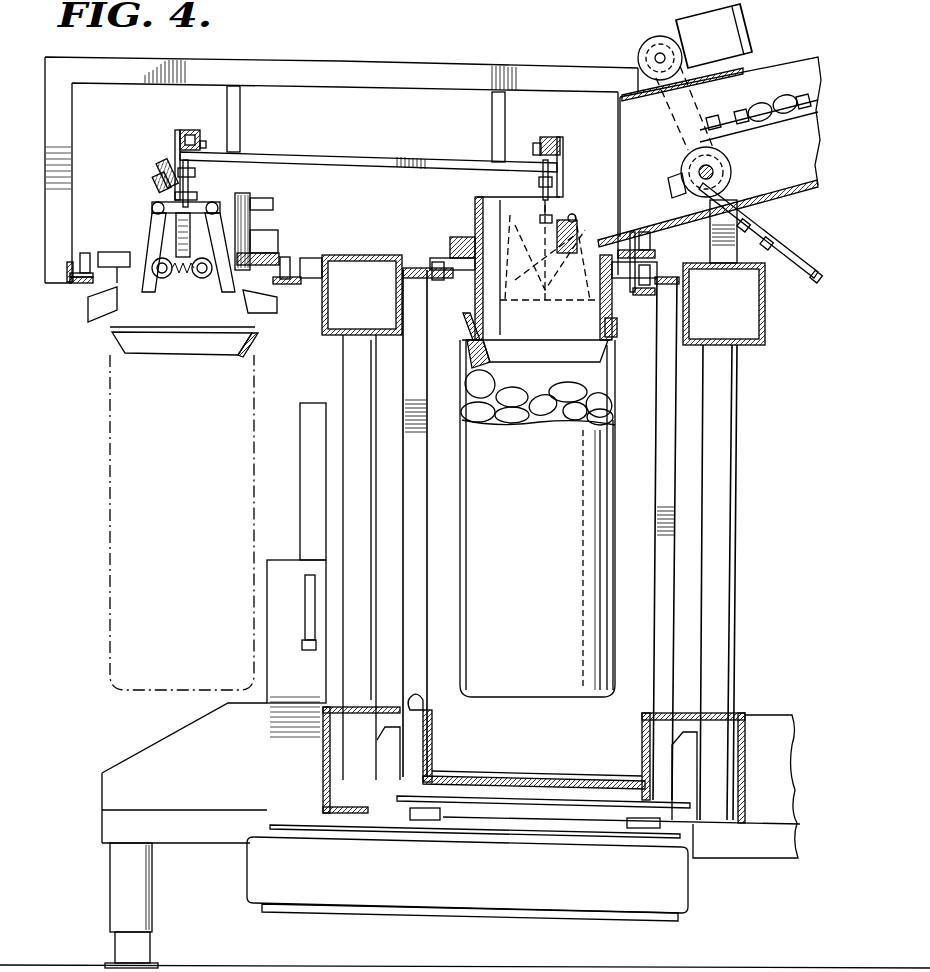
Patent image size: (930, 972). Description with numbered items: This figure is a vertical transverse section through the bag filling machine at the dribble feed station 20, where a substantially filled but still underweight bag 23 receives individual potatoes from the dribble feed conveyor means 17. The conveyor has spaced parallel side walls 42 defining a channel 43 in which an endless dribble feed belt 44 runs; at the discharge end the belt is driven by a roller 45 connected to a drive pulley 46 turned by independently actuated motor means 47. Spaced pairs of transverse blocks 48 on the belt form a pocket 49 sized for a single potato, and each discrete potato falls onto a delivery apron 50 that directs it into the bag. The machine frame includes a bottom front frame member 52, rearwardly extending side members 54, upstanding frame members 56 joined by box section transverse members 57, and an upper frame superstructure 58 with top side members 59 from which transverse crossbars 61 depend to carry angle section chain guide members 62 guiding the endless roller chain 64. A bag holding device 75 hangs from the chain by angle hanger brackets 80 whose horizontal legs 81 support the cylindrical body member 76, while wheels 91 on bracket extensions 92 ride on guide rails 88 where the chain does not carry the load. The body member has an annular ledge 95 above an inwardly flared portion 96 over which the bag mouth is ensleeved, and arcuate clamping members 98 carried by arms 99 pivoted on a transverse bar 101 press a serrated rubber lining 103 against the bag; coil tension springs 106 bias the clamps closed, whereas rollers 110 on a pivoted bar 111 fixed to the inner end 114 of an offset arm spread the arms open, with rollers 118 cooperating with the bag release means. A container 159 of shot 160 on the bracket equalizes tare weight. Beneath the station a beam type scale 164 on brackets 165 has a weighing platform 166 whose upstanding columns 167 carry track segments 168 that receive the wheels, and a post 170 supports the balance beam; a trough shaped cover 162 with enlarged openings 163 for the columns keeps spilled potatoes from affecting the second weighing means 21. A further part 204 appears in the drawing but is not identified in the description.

The dribble feed conveyor means 17 is at (603, 56).
The dribble feed station 20 is at (601, 192).
The second weighing means 21 is at (604, 726).
The bag 23 is at (112, 522).
The side walls 42 is at (788, 62).
The channel 43 is at (758, 103).
The dribble feed belt 44 is at (772, 238).
The roller 45 is at (735, 172).
The drive pulley 46 is at (636, 45).
The motor means 47 is at (692, 16).
The transverse blocks 48 is at (698, 128).
The pocket 49 is at (772, 110).
The delivery apron 50 is at (652, 250).
The bottom front frame member 52 is at (322, 748).
The side members 54 is at (163, 742).
The upstanding frame members 56 is at (345, 660).
The box section transverse members 57 is at (352, 256).
The upper frame superstructure 58 is at (437, 62).
The top side members 59 is at (300, 70).
The transverse crossbars 61 is at (328, 163).
The chain guide members 62 is at (532, 148).
The endless roller chain 64 is at (558, 134).
The bag holding device 75 is at (106, 175).
The cylindrical body member 76 is at (240, 200).
The angle hanger brackets 80 is at (566, 140).
The bottom horizontal leg 81 is at (543, 188).
The guide rails 88 is at (70, 281).
The wheels 91 is at (86, 253).
The bracket extensions 92 is at (108, 252).
The annular ledge 95 is at (160, 348).
The inwardly flared portion 96 is at (216, 345).
The arcuate clamping members 98 is at (90, 306).
The arms 99 is at (582, 265).
The transverse bar 101 is at (570, 215).
The rubber lining 103 is at (612, 350).
The coil tension spring 106 is at (182, 276).
The rollers 110 is at (549, 385).
The bar 111 is at (512, 198).
The inner end of offset arm 114 is at (152, 209).
The rollers 118 is at (160, 172).
The container 159 is at (270, 232).
The shot 160 is at (470, 245).
The trough shaped cover 162 is at (578, 782).
The enlarged openings 163 is at (420, 700).
The beam type scale 164 is at (267, 640).
The brackets 165 is at (616, 920).
The weighing platform 166 is at (485, 782).
The upstanding columns 167 is at (418, 592).
The track segments 168 is at (430, 272).
The post 170 is at (268, 683).
The arm 204 is at (273, 204).